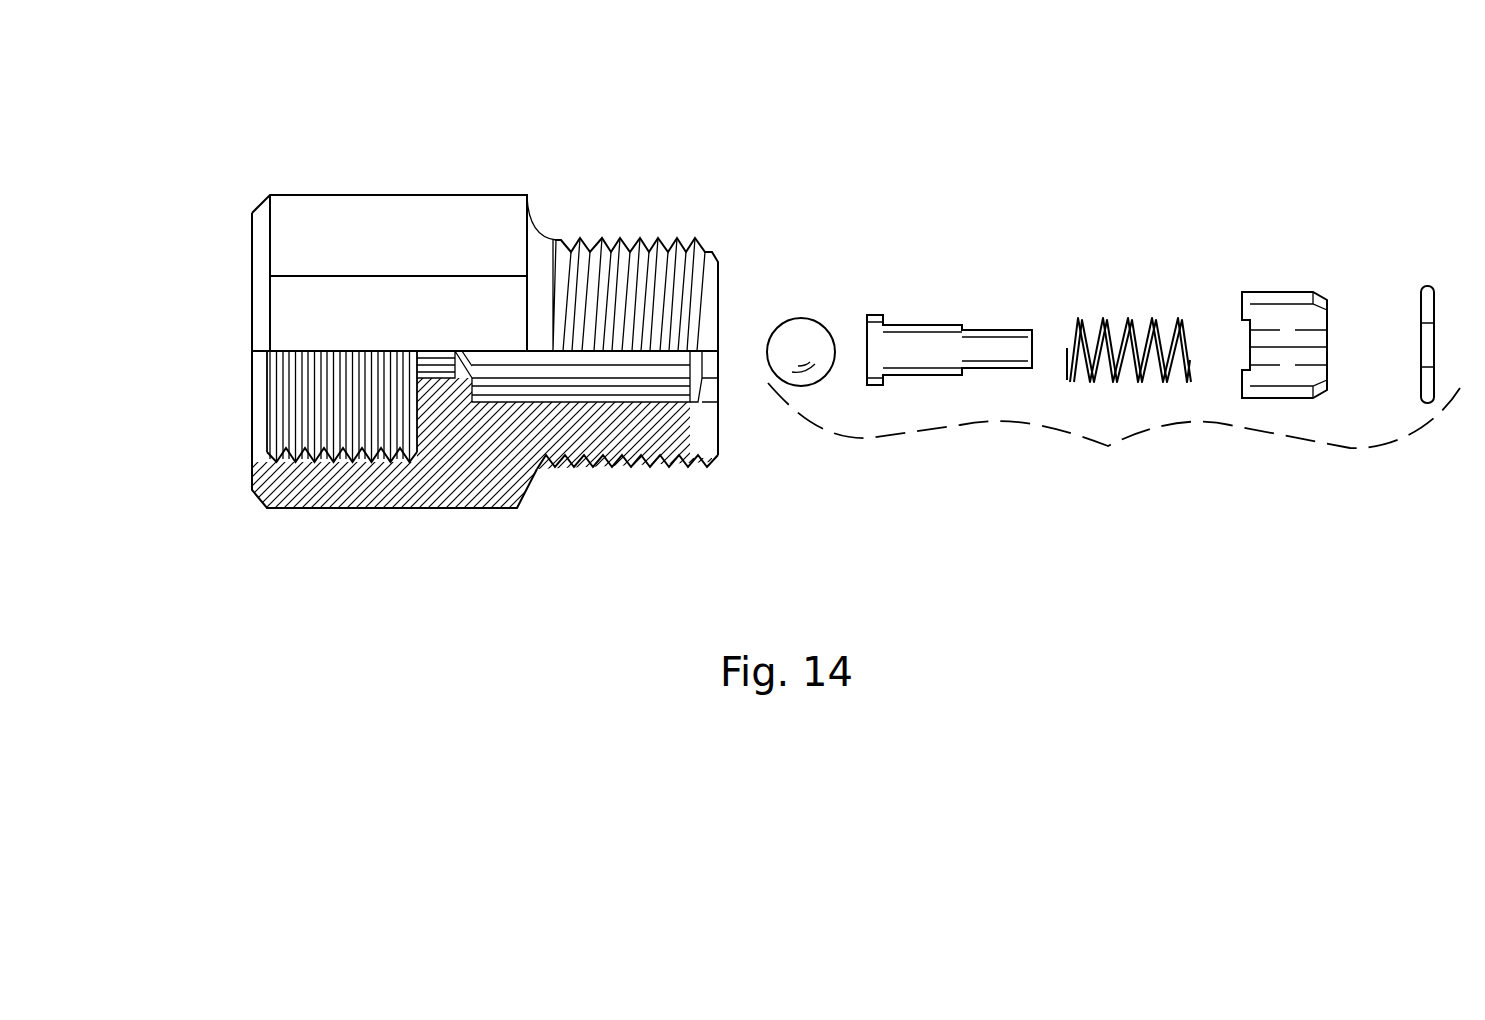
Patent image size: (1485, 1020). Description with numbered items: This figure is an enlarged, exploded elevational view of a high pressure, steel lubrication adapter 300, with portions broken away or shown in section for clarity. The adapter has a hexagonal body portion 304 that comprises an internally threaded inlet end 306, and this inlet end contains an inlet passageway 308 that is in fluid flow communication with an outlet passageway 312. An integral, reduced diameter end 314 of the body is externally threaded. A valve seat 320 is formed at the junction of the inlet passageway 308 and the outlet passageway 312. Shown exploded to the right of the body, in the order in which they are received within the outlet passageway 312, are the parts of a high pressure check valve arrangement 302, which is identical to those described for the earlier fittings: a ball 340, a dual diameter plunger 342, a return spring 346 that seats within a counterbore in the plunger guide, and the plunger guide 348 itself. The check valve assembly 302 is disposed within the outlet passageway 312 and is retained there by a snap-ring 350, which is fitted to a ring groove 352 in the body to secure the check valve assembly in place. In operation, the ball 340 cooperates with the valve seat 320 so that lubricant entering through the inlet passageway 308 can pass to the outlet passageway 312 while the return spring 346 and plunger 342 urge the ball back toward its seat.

The lubrication adapter 300 is at (523, 168).
The check valve arrangement 302 is at (1114, 435).
The hexagonal body portion 304 is at (374, 487).
The internally threaded inlet end 306 is at (249, 322).
The inlet passageway 308 is at (315, 410).
The outlet passageway 312 is at (593, 387).
The reduced diameter end 314 is at (723, 277).
The valve seat 320 is at (470, 368).
The ball 340 is at (793, 342).
The dual diameter plunger 342 is at (959, 309).
The return spring 346 is at (1112, 309).
The plunger guide 348 is at (1262, 290).
The snap-ring 350 is at (1427, 289).
The ring groove 352 is at (704, 381).